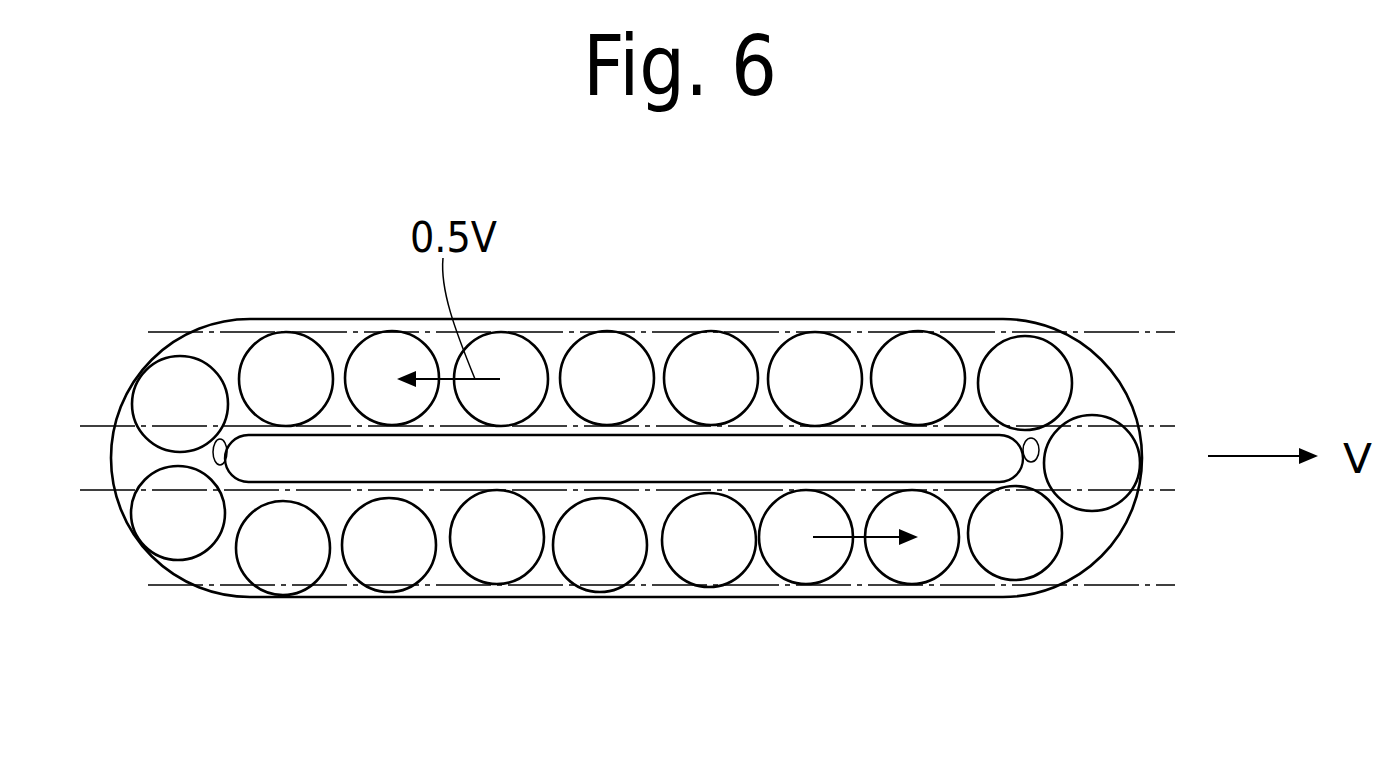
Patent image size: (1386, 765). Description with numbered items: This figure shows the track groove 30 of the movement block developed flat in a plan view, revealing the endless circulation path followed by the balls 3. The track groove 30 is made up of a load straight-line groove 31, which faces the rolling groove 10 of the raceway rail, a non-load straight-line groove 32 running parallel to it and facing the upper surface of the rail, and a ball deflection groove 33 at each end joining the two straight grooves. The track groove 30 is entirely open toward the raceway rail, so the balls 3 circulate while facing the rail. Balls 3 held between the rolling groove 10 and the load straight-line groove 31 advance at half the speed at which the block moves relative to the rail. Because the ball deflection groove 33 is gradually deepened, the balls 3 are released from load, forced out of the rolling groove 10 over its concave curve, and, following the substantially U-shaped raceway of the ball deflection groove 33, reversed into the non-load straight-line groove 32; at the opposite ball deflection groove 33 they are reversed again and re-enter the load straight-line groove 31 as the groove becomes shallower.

The balls 3 is at (625, 367).
The rolling groove 10 is at (1143, 322).
The track groove 30 is at (969, 313).
The load straight-line groove 31 is at (552, 326).
The non-load straight-line groove 32 is at (511, 594).
The ball deflection groove 33 is at (229, 445).